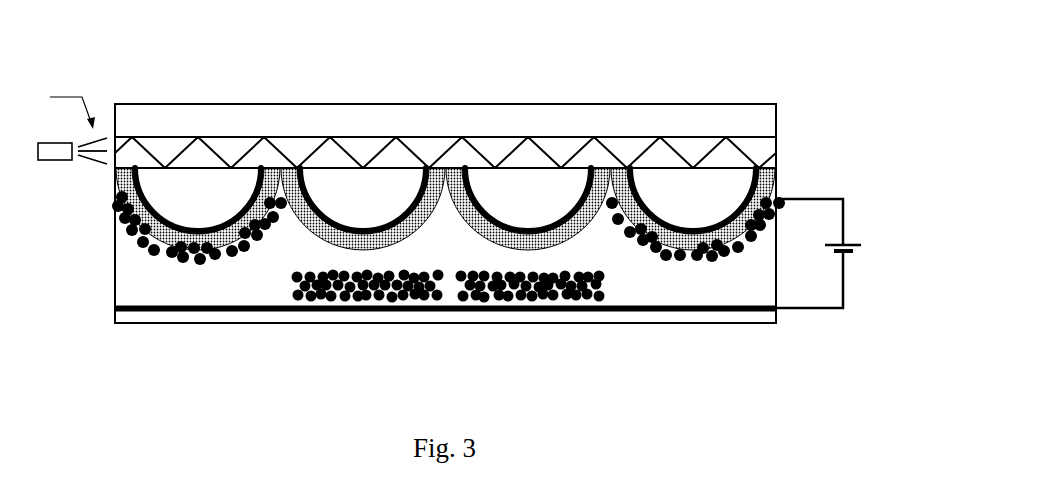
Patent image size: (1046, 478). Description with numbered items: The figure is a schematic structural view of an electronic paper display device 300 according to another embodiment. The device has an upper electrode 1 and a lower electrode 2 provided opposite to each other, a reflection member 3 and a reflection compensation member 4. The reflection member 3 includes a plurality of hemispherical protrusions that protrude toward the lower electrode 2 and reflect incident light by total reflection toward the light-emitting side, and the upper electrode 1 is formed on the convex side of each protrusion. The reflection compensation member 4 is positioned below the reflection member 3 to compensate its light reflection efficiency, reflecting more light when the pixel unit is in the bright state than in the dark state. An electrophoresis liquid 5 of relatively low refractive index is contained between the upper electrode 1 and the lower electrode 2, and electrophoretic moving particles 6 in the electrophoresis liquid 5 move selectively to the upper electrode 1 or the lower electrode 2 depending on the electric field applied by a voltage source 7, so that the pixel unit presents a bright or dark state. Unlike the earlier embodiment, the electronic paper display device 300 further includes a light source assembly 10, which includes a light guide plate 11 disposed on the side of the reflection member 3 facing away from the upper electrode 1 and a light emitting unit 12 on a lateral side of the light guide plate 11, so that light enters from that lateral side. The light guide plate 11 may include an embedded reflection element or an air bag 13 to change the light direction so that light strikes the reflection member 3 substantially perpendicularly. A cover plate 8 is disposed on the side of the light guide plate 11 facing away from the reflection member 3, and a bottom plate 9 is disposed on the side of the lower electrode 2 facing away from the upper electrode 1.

The electronic paper display device 300 is at (129, 76).
The upper electrode 1 is at (727, 206).
The lower electrode 2 is at (466, 330).
The reflection member 3 is at (165, 209).
The reflection compensation member 4 is at (359, 218).
The electrophoresis liquid 5 is at (445, 259).
The electrophoretic moving particles 6 is at (418, 267).
The voltage source 7 is at (838, 253).
The cover plate 8 is at (445, 107).
The bottom plate 9 is at (445, 333).
The light source assembly 10 is at (60, 107).
The light guide plate 11 is at (482, 145).
The light emitting unit 12 is at (61, 141).
The air bag 13 is at (445, 122).